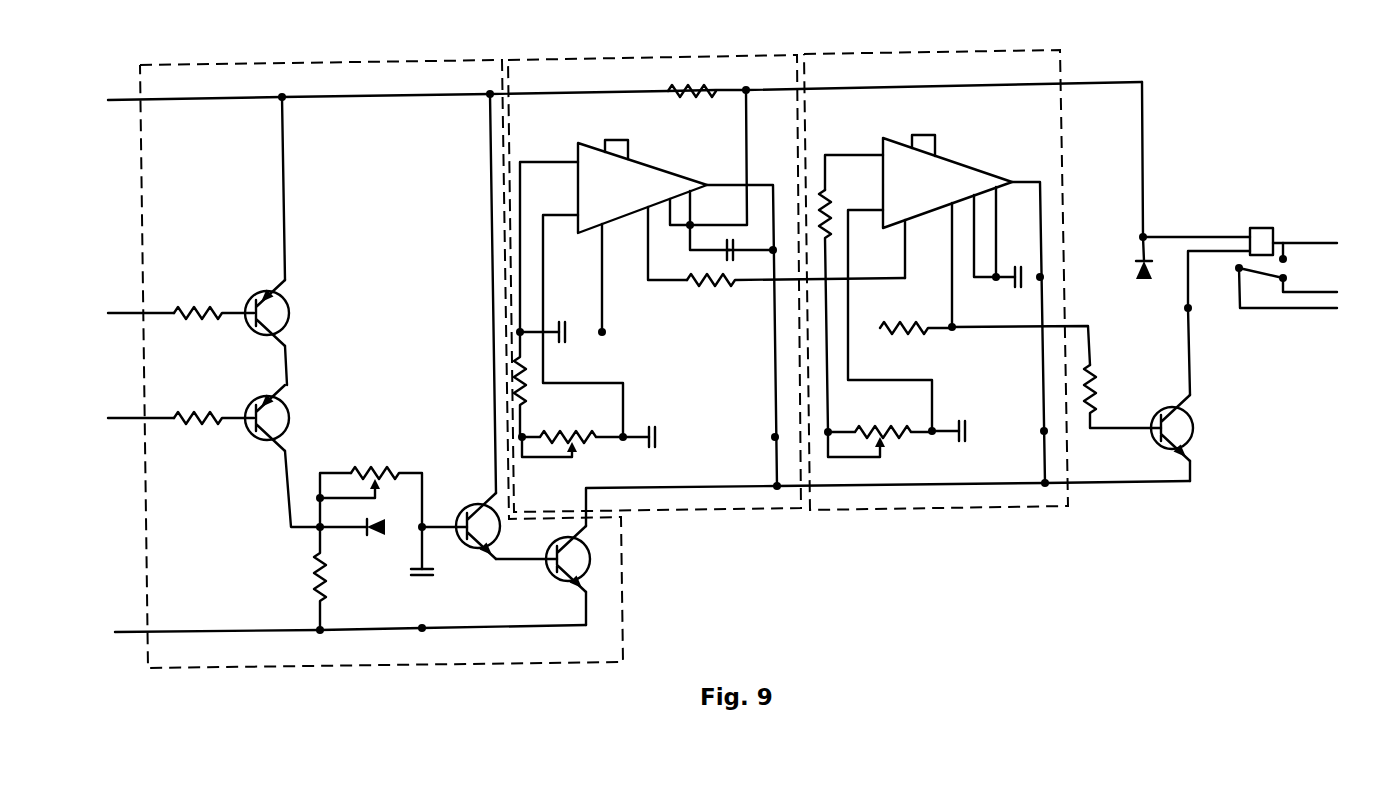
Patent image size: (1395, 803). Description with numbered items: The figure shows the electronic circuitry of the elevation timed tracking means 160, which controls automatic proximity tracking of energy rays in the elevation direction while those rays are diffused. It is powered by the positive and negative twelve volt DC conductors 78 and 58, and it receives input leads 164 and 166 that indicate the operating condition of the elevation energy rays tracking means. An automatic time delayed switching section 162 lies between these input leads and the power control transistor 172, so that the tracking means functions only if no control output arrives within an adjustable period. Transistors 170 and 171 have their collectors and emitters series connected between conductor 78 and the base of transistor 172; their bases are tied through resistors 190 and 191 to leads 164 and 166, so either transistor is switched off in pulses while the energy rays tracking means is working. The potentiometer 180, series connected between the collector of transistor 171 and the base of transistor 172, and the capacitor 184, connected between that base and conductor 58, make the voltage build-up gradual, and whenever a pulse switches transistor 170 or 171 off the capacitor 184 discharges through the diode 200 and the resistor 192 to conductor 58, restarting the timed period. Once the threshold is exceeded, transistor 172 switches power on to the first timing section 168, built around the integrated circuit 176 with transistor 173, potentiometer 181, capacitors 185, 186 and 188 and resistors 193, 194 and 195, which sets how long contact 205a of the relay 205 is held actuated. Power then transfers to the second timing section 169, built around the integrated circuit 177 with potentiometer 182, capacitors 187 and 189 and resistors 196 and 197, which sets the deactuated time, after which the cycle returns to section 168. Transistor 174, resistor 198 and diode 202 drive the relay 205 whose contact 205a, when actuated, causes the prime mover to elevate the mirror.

The negative 12 volt DC conductor 58 is at (112, 632).
The positive 12 volt DC conductor 78 is at (108, 98).
The elevation timed tracking means 160 is at (1096, 554).
The automatic time delayed switching section 162 is at (332, 63).
The input lead 164 is at (116, 312).
The input lead 166 is at (122, 418).
The first timing section 168 is at (644, 56).
The second timing section 169 is at (911, 52).
The transistor 170 is at (291, 311).
The transistor 171 is at (291, 415).
The power control transistor 172 is at (478, 500).
The transistor 173 is at (558, 586).
The transistor 174 is at (1194, 426).
The integrated circuit 176 is at (662, 163).
The integrated circuit 177 is at (969, 161).
The potentiometer 180 is at (373, 464).
The potentiometer 181 is at (585, 445).
The potentiometer 182 is at (895, 442).
The capacitor 184 is at (434, 580).
The capacitor 185 is at (568, 338).
The capacitor 186 is at (658, 443).
The capacitor 187 is at (968, 440).
The capacitor 188 is at (744, 231).
The capacitor 189 is at (1016, 287).
The resistor 190 is at (199, 289).
The resistor 191 is at (207, 433).
The resistor 192 is at (311, 580).
The resistor 193 is at (691, 95).
The resistor 194 is at (527, 388).
The resistor 195 is at (729, 288).
The resistor 196 is at (827, 198).
The resistor 197 is at (908, 338).
The resistor 198 is at (1094, 388).
The diode 200 is at (374, 534).
The diode 202 is at (1131, 266).
The relay 205 is at (1264, 225).
The contact 205a is at (1235, 272).